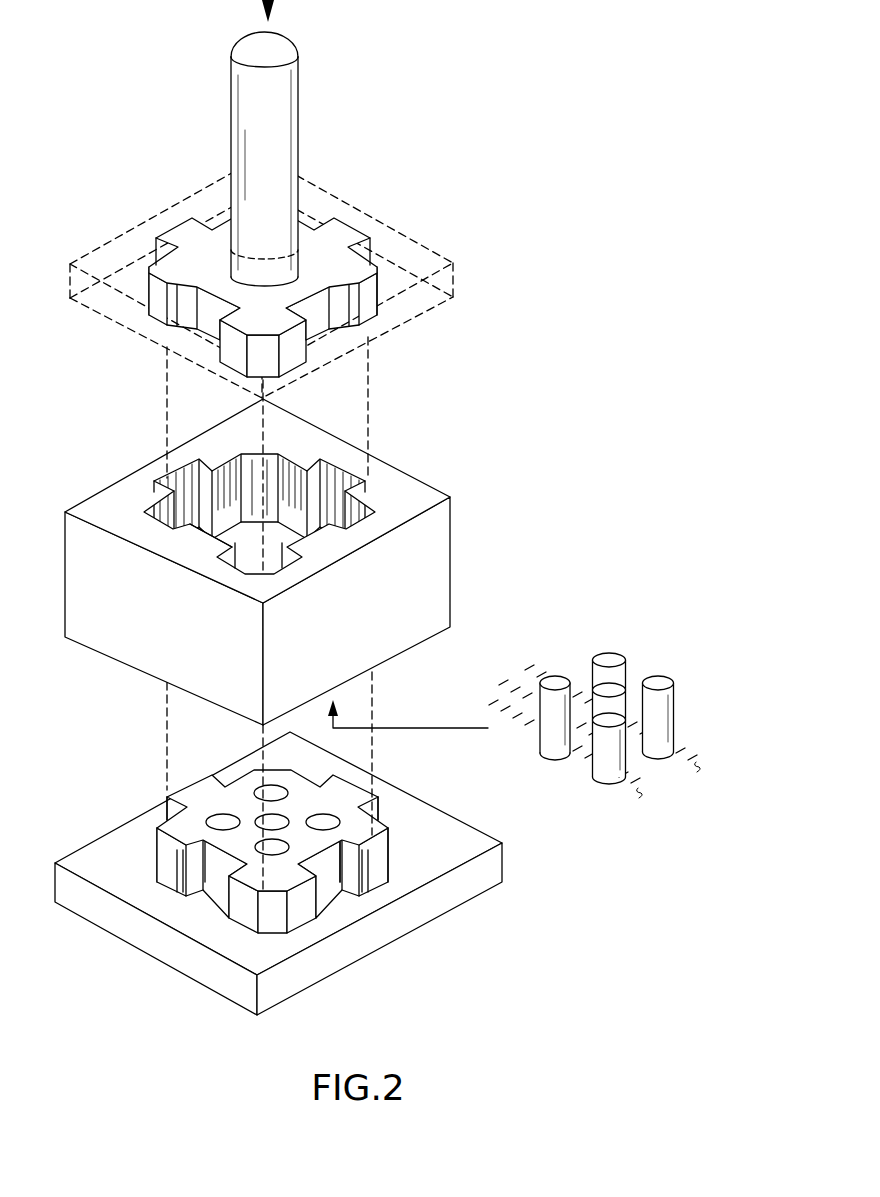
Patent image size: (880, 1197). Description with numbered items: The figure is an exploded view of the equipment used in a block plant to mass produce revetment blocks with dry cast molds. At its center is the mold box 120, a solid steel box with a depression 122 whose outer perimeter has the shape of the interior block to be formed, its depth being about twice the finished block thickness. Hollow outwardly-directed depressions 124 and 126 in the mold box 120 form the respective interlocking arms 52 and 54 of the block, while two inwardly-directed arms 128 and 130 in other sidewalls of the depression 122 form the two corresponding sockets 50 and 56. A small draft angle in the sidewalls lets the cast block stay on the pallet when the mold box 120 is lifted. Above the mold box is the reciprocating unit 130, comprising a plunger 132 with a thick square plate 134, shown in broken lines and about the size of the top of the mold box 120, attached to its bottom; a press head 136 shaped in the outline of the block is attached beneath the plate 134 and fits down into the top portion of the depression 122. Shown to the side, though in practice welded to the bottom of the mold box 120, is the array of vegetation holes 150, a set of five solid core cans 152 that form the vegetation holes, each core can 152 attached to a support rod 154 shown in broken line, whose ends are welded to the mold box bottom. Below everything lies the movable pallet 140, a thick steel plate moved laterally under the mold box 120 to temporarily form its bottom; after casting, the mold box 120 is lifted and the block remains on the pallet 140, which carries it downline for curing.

The socket 50 is at (282, 873).
The interlocking arm 52 is at (352, 792).
The interlocking arm 54 is at (193, 787).
The socket 56 is at (327, 877).
The mold box 120 is at (290, 556).
The depression 122 is at (287, 478).
The outwardly-directed depression 124 is at (343, 473).
The outwardly-directed depression 126 is at (180, 478).
The inwardly-directed arm 128 is at (207, 545).
The reciprocating unit 130 is at (309, 309).
The plunger 132 is at (292, 108).
The square plate 134 is at (108, 250).
The press head 136 is at (347, 273).
The pallet 140 is at (480, 837).
The array of vegetation holes 150 is at (618, 702).
The solid core can 152 is at (588, 668).
The support rod 154 is at (690, 757).